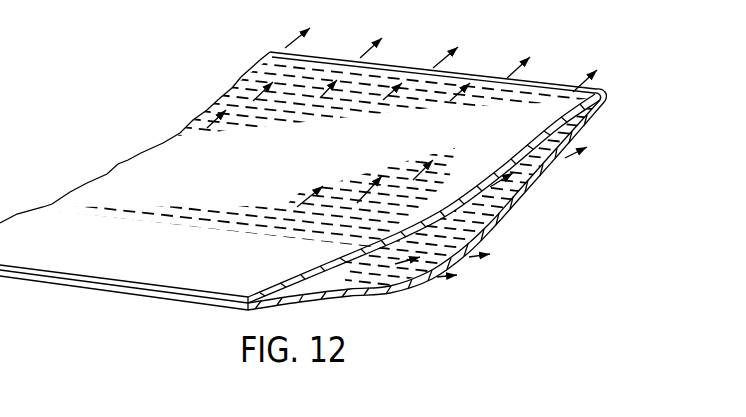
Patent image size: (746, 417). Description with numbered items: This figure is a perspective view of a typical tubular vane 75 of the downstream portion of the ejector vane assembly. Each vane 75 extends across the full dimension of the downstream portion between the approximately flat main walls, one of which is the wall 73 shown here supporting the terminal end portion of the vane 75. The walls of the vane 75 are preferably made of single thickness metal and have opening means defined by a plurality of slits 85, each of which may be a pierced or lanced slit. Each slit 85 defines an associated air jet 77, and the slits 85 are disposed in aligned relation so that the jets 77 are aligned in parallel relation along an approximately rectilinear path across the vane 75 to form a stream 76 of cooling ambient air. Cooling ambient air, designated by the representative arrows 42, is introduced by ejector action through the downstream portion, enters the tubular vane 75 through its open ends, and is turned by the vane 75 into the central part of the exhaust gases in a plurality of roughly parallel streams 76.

The wall 73 is at (10, 0).
The tubular vane 75 is at (160, 145).
The stream 76 is at (288, 40).
The jet 77 is at (373, 175).
The slit 85 is at (292, 117).
The reference arrow 42 is at (477, 209).